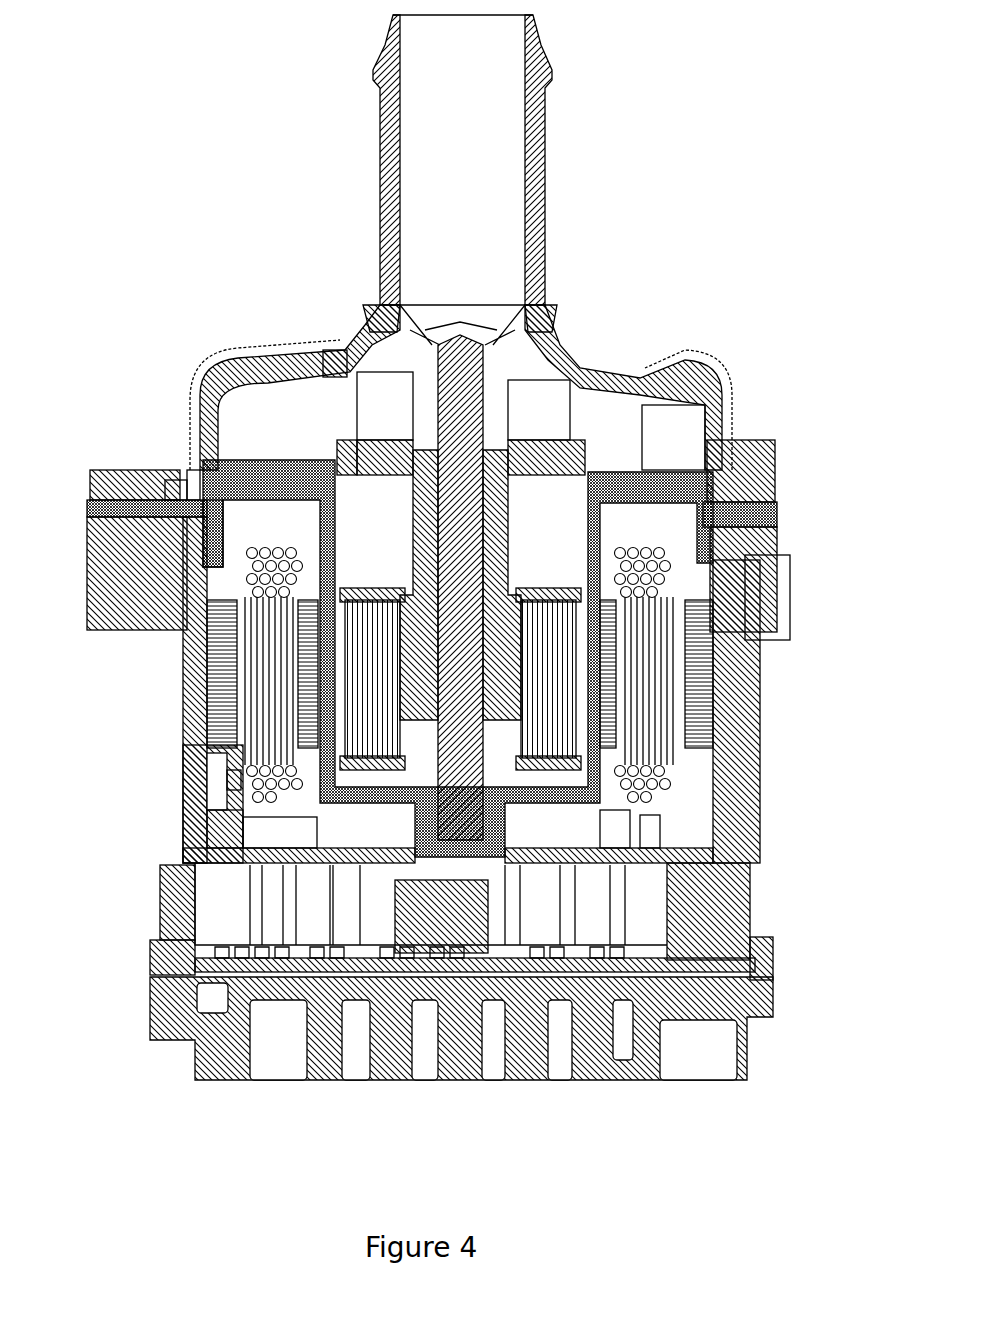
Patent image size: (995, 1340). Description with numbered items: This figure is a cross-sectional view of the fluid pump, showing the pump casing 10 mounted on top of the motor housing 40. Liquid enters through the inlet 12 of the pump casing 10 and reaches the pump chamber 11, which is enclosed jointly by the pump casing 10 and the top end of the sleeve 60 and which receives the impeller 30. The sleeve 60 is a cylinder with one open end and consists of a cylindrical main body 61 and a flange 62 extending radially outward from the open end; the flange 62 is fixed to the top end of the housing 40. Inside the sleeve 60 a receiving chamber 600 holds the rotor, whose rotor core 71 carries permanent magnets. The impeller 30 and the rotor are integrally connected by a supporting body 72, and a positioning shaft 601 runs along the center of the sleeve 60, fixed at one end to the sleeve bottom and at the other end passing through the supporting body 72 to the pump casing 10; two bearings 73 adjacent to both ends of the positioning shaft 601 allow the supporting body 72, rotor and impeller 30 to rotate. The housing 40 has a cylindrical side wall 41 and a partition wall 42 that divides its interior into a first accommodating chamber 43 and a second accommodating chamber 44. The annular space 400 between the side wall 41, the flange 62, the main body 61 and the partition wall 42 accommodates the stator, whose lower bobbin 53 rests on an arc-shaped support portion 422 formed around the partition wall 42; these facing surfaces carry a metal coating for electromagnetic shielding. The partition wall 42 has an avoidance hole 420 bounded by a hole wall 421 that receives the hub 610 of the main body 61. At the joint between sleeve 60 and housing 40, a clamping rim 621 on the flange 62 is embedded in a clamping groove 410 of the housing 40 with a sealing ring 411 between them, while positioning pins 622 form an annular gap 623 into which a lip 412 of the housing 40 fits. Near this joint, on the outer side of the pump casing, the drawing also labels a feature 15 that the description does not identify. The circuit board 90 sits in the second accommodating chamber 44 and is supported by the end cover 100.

The inlet 12 is at (455, 170).
The pump casing 10 is at (222, 397).
The sleeve 60 is at (342, 252).
The main body 61 is at (340, 560).
The flange 62 is at (293, 470).
The positioning shaft 601 is at (535, 330).
The lip 412 is at (198, 478).
The impeller 30 is at (530, 408).
The annular gap 623 is at (183, 497).
The supporting body 72 is at (520, 540).
The clamping rim 621 is at (155, 470).
The pump chamber 11 is at (687, 430).
The flange 15 is at (745, 515).
The receiving chamber 600 is at (577, 563).
The annular space 400 is at (703, 582).
The clamping groove 410 is at (170, 595).
The sealing ring 411 is at (186, 597).
The rotor core 71 is at (565, 668).
The positioning pins 622 is at (212, 580).
The lower bobbin 53 is at (233, 782).
The bearings 73 is at (630, 745).
The support portion 422 is at (228, 820).
The hub 610 is at (625, 828).
The housing 40 is at (403, 748).
The side wall 41 is at (183, 833).
The partition wall 42 is at (260, 870).
The first accommodating chamber 43 is at (362, 833).
The second accommodating chamber 44 is at (362, 920).
The avoidance hole 420 is at (414, 860).
The hole wall 421 is at (510, 820).
The end cover 100 is at (597, 1033).
The circuit board 90 is at (613, 972).